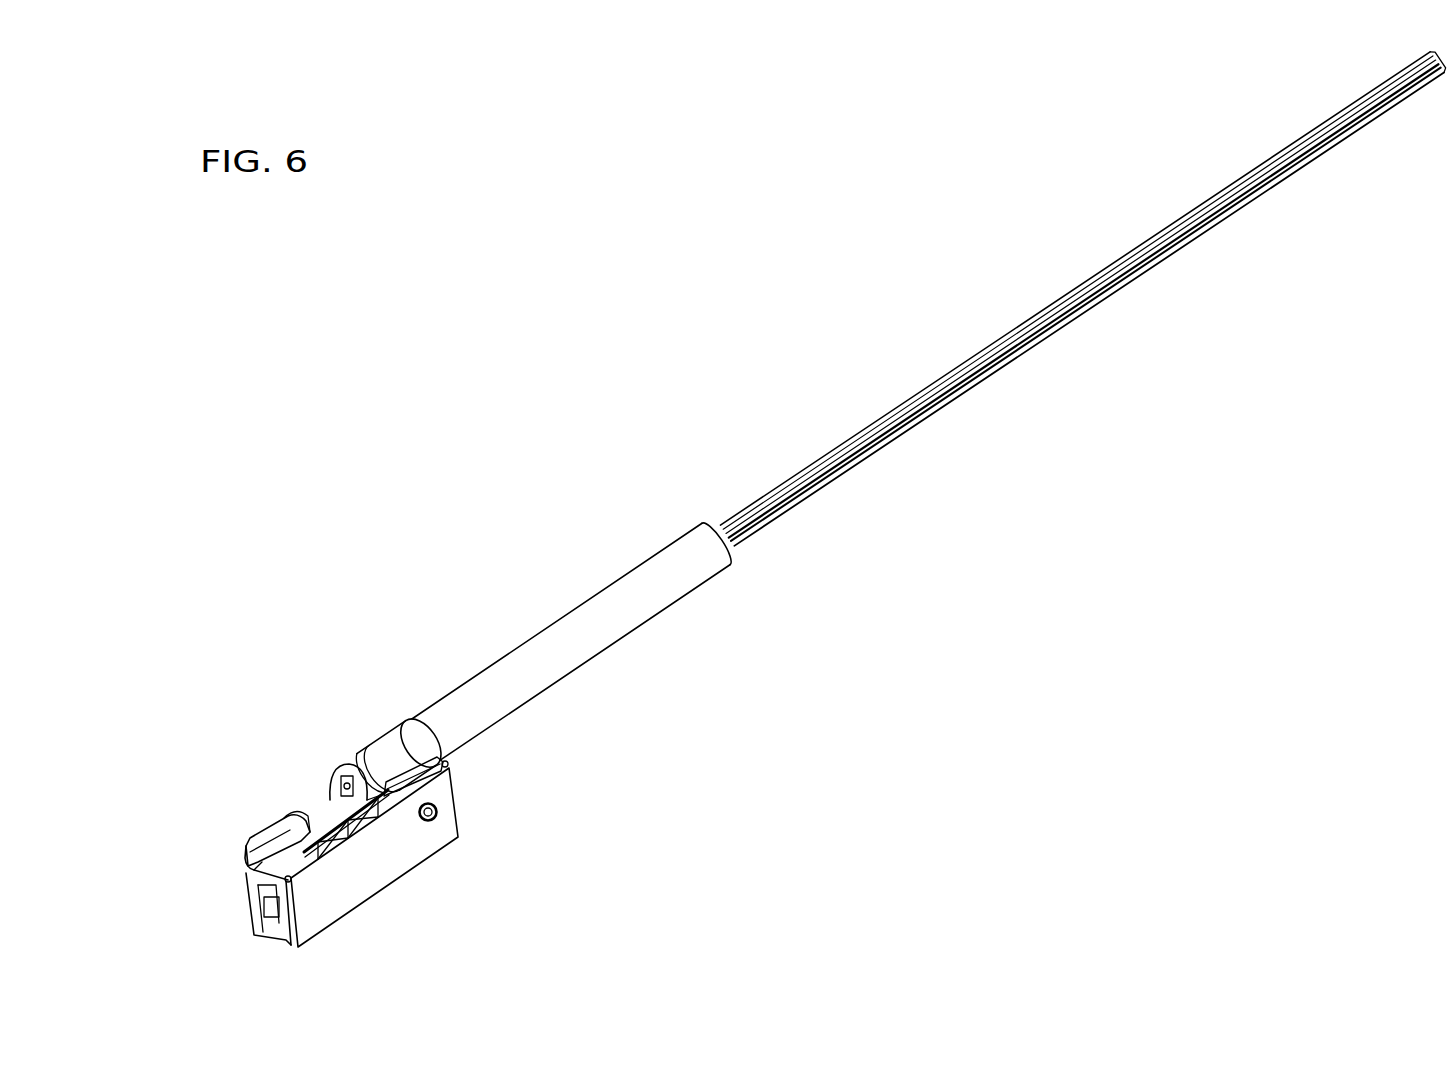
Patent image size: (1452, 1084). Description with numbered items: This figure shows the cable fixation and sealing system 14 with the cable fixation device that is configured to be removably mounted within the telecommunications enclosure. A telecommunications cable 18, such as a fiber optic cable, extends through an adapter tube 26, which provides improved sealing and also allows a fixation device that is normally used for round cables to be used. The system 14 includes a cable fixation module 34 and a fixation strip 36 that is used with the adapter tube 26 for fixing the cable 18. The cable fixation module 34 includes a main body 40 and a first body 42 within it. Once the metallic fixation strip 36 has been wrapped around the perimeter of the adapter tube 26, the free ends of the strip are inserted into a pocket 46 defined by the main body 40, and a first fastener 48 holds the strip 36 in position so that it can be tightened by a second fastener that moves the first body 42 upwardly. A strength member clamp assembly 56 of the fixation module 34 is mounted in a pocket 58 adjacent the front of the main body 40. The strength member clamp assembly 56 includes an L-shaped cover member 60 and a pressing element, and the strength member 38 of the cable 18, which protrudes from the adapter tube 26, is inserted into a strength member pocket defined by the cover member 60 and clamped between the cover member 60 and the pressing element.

The fixation and sealing system 14 is at (583, 710).
The telecommunications cable 18 is at (902, 408).
The adapter tube 26 is at (614, 632).
The cable fixation module 34 is at (383, 877).
The fixation strip 36 is at (418, 750).
The strength member 38 is at (322, 814).
The main body 40 is at (314, 920).
The first body 42 is at (437, 778).
The pocket 46 is at (380, 800).
The first fastener 48 is at (439, 812).
The strength member clamp assembly 56 is at (228, 840).
The pocket 58 is at (307, 842).
The L-shaped cover member 60 is at (275, 826).